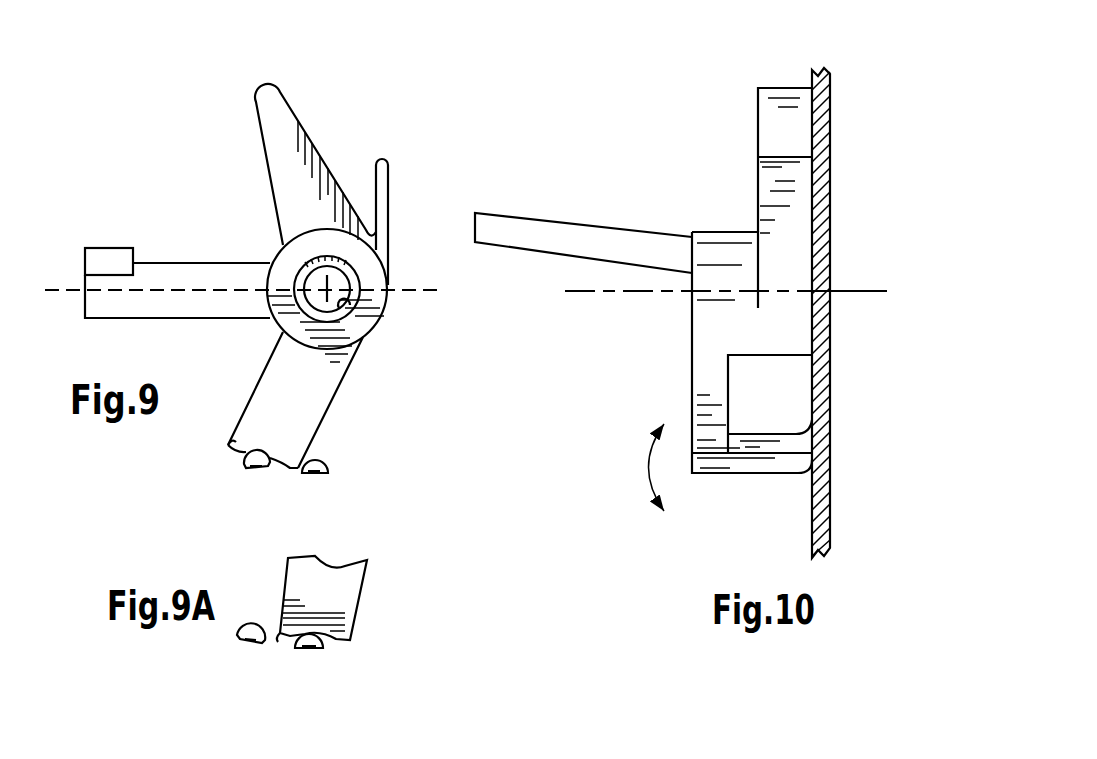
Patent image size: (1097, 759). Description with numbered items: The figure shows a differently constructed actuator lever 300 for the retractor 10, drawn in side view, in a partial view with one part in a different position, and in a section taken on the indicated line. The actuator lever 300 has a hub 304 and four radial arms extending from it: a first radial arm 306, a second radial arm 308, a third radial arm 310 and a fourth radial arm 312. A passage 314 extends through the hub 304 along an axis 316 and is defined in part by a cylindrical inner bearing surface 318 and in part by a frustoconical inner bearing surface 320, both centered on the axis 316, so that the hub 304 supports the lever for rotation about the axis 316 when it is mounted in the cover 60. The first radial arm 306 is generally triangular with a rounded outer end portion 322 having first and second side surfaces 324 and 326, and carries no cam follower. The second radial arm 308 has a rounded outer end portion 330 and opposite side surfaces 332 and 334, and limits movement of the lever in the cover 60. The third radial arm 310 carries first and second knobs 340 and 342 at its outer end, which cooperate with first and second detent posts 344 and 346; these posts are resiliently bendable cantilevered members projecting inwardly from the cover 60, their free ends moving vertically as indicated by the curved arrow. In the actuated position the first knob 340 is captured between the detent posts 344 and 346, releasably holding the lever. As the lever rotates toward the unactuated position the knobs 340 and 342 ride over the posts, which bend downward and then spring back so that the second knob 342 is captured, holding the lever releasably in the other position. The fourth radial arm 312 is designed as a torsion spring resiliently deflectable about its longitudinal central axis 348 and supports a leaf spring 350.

In FIG. 9, the retractor 10 is at (430, 40).
In FIG. 10, the cover 60 is at (822, 450).
In FIG. 9, the actuator lever 300 is at (128, 190).
In FIG. 10, the actuator lever 300 is at (642, 143).
In FIG. 9, the hub 304 is at (362, 246).
In FIG. 10, the hub 304 is at (700, 228).
In FIG. 9, the first radial arm 306 is at (262, 86).
In FIG. 10, the first radial arm 306 is at (787, 82).
In FIG. 9, the second radial arm 308 is at (392, 150).
In FIG. 10, the second radial arm 308 is at (772, 157).
In FIG. 9, the third radial arm 310 is at (327, 423).
In FIG. 9A, the third radial arm 310 is at (362, 592).
In FIG. 10, the third radial arm 310 is at (690, 380).
In FIG. 9, the fourth radial arm 312 is at (210, 258).
In FIG. 9, the passage 314 is at (342, 292).
In FIG. 9, the axis 316 is at (335, 285).
In FIG. 10, the axis 316 is at (660, 292).
In FIG. 9, the cylindrical inner bearing surface 318 is at (350, 306).
In FIG. 9, the frustoconical inner bearing surface 320 is at (330, 340).
In FIG. 9, the rounded outer end portion 322 is at (268, 117).
In FIG. 10, the rounded outer end portion 322 is at (760, 95).
In FIG. 9, the first side surface 324 is at (262, 171).
In FIG. 9, the second side surface 326 is at (292, 107).
In FIG. 10, the second side surface 326 is at (778, 113).
In FIG. 9, the rounded outer end portion 330 is at (380, 157).
In FIG. 10, the rounded outer end portion 330 is at (760, 178).
In FIG. 9, the side surface 332 is at (374, 180).
In FIG. 9, the side surface 334 is at (390, 190).
In FIG. 10, the side surface 334 is at (780, 196).
In FIG. 9, the first knob 340 is at (288, 470).
In FIG. 9A, the first knob 340 is at (340, 645).
In FIG. 9, the second knob 342 is at (233, 441).
In FIG. 9A, the second knob 342 is at (277, 640).
In FIG. 9, the first detent post 344 is at (330, 473).
In FIG. 9A, the first detent post 344 is at (310, 651).
In FIG. 10, the first detent post 344 is at (762, 475).
In FIG. 9, the second detent post 346 is at (256, 466).
In FIG. 9A, the second detent post 346 is at (243, 634).
In FIG. 10, the second detent post 346 is at (762, 436).
In FIG. 9, the longitudinal central axis 348 is at (65, 287).
In FIG. 9, the leaf spring 350 is at (105, 248).
In FIG. 10, the leaf spring 350 is at (540, 230).